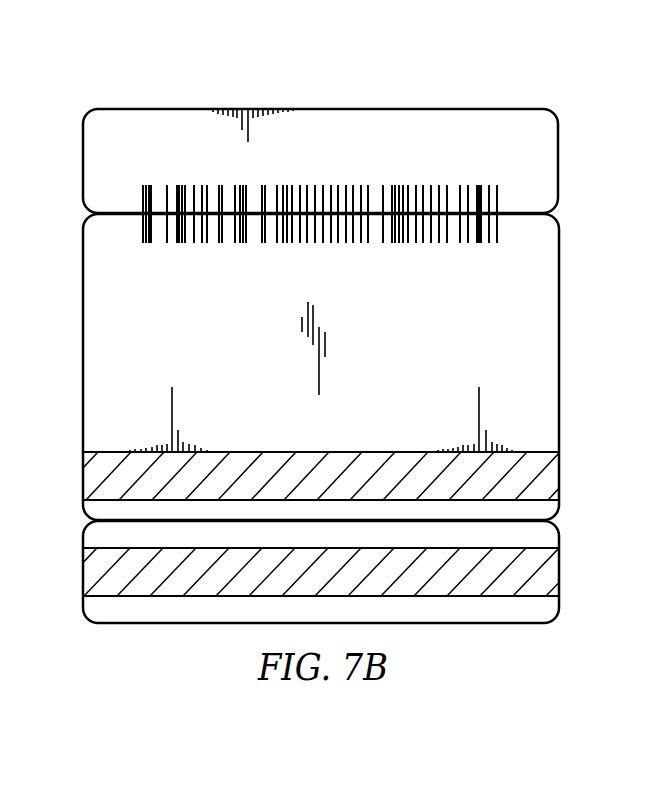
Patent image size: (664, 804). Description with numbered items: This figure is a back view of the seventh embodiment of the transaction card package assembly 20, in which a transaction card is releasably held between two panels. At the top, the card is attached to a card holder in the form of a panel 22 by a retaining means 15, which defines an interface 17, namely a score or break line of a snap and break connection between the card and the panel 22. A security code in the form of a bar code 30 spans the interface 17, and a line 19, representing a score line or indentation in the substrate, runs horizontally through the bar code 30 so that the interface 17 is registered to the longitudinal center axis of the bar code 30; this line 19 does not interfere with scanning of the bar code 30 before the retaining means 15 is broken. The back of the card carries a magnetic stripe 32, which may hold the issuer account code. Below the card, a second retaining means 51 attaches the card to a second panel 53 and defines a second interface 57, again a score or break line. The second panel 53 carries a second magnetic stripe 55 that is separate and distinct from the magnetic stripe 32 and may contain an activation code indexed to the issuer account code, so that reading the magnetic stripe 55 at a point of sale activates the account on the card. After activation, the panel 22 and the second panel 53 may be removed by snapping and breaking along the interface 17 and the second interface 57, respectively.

The transaction card package assembly 20 is at (70, 47).
The panel 22 is at (480, 127).
The interface 17 is at (522, 213).
The line 19 is at (375, 217).
The retaining means 15 is at (123, 214).
The bar code 30 is at (397, 214).
The magnetic stripe 32 is at (560, 479).
The second panel 53 is at (83, 520).
The second retaining means 51 is at (410, 521).
The second interface 57 is at (465, 521).
The second magnetic stripe 55 is at (560, 577).